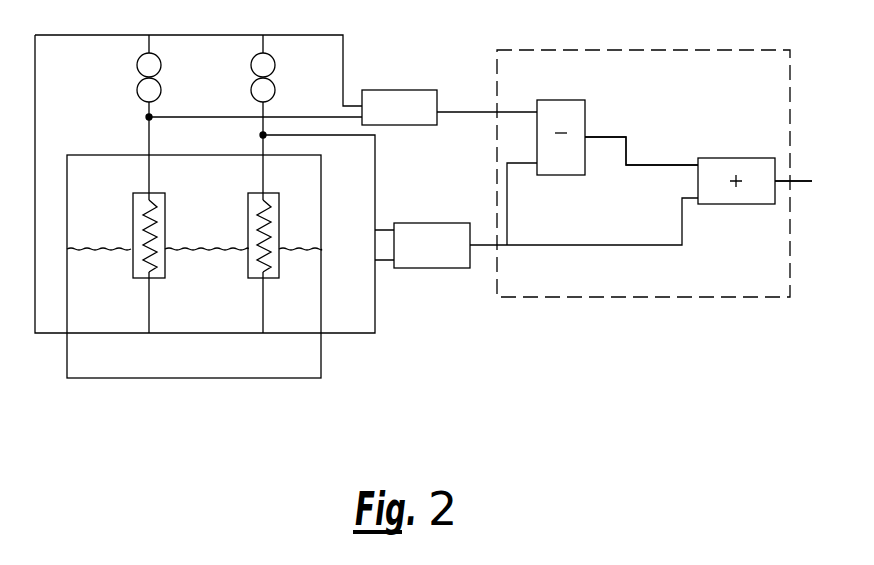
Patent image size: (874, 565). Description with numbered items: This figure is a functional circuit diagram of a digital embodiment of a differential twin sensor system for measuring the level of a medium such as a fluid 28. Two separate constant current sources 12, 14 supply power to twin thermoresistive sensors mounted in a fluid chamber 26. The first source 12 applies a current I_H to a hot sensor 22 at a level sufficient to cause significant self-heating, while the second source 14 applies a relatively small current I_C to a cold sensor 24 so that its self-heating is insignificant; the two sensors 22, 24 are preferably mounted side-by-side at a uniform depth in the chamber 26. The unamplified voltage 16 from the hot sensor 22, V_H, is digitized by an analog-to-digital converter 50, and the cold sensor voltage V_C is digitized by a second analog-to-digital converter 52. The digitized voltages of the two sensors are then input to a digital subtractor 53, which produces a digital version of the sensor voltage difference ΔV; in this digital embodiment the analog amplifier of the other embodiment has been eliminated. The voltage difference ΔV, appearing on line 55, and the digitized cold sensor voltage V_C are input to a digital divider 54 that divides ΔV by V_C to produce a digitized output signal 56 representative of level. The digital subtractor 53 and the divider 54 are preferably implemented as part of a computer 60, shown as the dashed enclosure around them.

The constant current source 12 is at (137, 77).
The constant current source 14 is at (275, 77).
The unamplified voltage 16 is at (310, 107).
The hot sensor 22 is at (167, 203).
The cold sensor 24 is at (281, 203).
The fluid chamber 26 is at (323, 230).
The fluid 28 is at (312, 323).
The analog-to-digital converter 50 is at (432, 90).
The analog-to-digital converter 52 is at (435, 223).
The digital subtractor 53 is at (585, 112).
The digital divider 54 is at (738, 158).
The line 55 is at (613, 137).
The digitized output signal 56 is at (805, 181).
The computer 60 is at (726, 50).